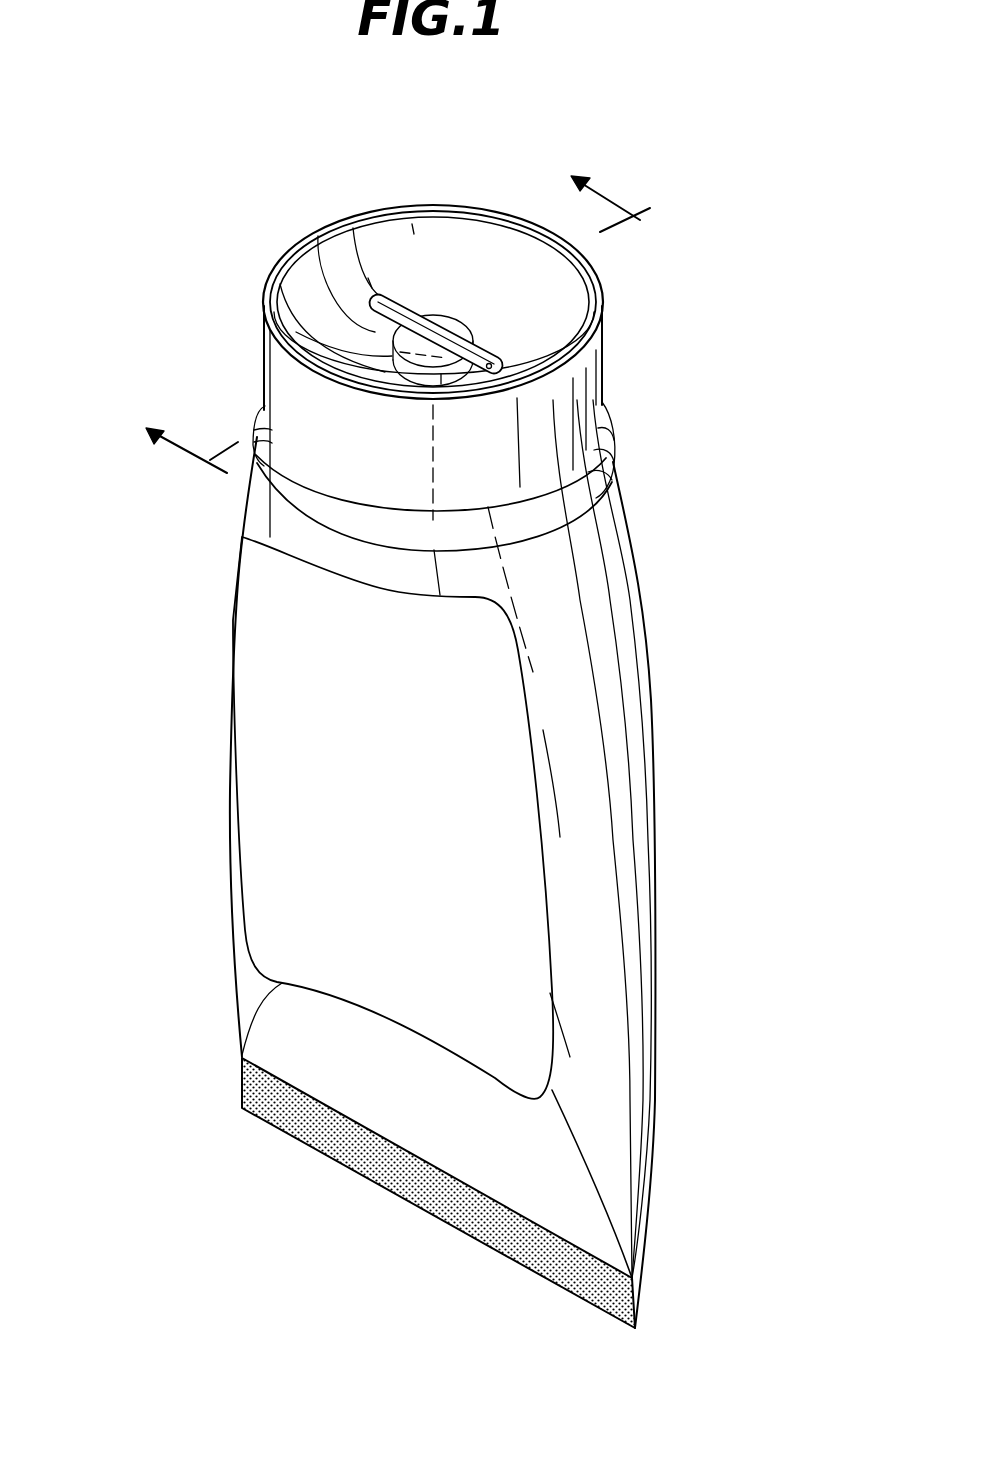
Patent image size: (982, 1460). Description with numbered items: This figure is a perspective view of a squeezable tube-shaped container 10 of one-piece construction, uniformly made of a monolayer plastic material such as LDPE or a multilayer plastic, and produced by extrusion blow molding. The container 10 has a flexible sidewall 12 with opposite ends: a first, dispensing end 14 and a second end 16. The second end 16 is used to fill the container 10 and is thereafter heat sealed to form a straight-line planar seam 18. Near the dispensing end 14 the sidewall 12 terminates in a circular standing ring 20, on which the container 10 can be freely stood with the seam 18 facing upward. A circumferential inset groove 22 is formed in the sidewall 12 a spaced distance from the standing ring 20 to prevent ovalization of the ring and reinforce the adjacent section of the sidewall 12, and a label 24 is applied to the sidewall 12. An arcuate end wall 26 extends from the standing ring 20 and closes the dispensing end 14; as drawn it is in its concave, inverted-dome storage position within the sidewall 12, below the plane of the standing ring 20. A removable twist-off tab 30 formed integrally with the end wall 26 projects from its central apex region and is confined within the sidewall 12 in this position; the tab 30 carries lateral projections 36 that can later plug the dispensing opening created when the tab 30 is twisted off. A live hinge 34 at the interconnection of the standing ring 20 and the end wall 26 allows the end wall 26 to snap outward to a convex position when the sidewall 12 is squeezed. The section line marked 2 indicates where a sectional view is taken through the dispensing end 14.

The section line 2- 2 is at (386, 315).
The tube-shaped container 10 is at (698, 613).
The flexible sidewall 12 is at (634, 916).
The dispensing end 14 is at (595, 300).
The second end 16 is at (605, 1248).
The seam 18 is at (372, 1167).
The standing ring 20 is at (277, 267).
The circumferential inset groove 22 is at (614, 462).
The label 24 is at (275, 822).
The arcuate end wall 26 is at (517, 262).
The removable tab 30 is at (405, 302).
The live hinge 34 is at (303, 259).
The lateral projections 36 is at (383, 302).